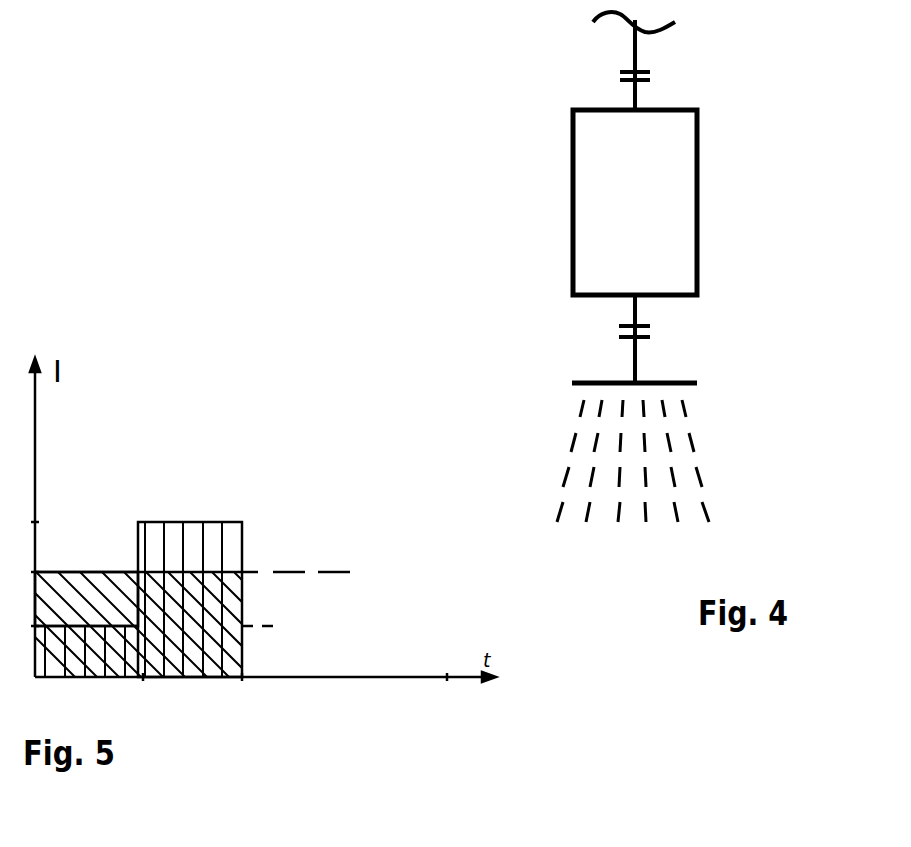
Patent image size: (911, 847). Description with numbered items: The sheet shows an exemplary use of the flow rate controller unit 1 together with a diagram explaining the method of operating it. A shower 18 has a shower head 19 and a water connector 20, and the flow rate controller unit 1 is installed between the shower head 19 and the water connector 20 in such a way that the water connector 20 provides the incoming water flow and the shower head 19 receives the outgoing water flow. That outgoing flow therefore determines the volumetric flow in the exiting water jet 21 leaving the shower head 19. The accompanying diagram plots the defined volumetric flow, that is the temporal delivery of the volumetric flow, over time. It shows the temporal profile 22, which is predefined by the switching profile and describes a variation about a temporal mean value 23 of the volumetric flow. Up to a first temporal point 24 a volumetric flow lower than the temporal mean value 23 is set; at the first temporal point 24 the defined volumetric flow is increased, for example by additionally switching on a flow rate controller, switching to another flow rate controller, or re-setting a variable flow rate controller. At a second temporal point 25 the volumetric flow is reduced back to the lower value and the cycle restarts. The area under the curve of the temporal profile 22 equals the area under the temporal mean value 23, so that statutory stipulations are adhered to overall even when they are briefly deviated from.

In FIG. 4, the shower 18 is at (455, 141).
In FIG. 4, the water connector 20 is at (635, 43).
In FIG. 4, the flow rate controller unit 1 is at (573, 188).
In FIG. 4, the shower head 19 is at (572, 383).
In FIG. 4, the exiting water jet 21 is at (570, 478).
In FIG. 5, the temporal profile 22 is at (198, 522).
In FIG. 5, the temporal mean value 23 is at (113, 572).
In FIG. 5, the first temporal point 24 is at (146, 697).
In FIG. 5, the second temporal point 25 is at (246, 721).